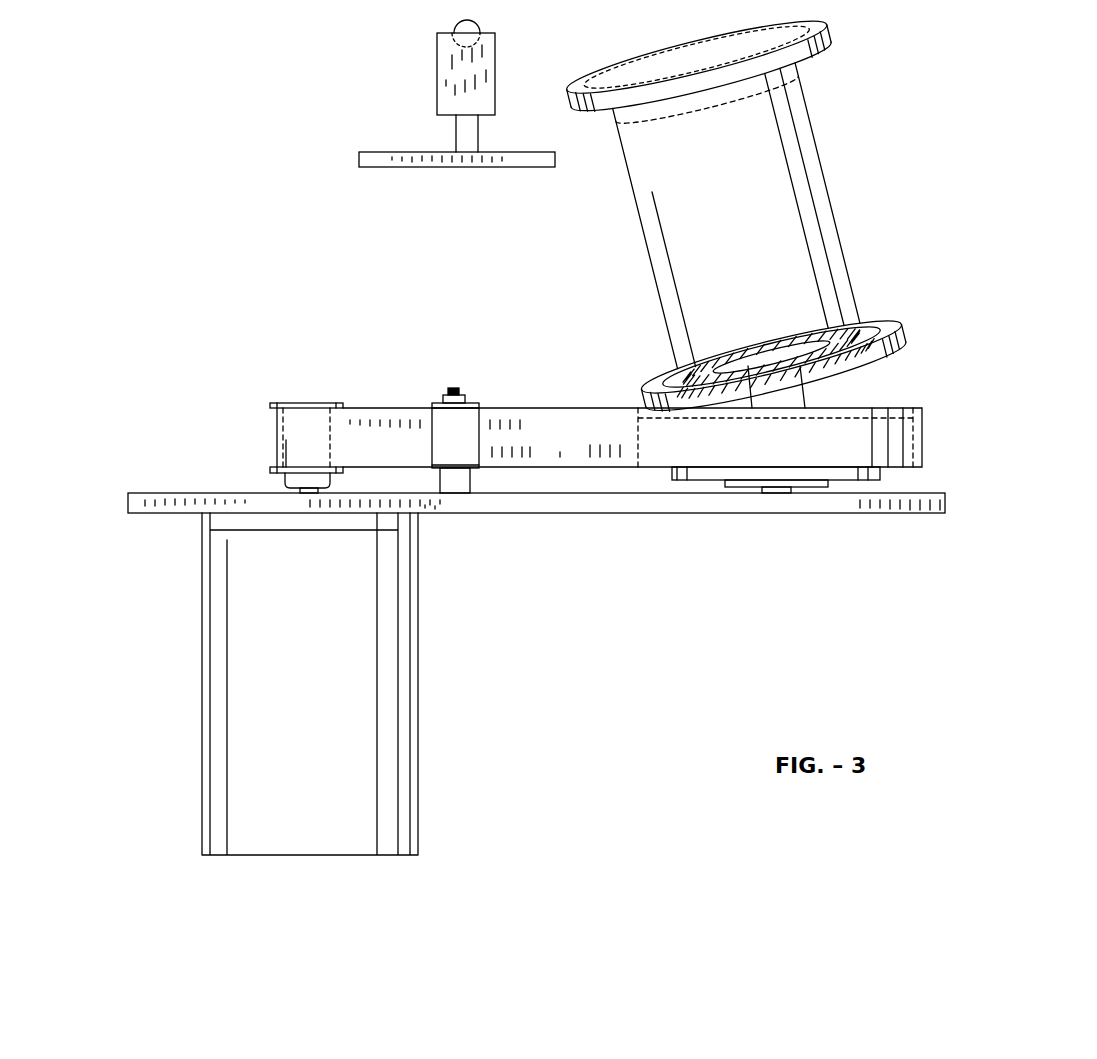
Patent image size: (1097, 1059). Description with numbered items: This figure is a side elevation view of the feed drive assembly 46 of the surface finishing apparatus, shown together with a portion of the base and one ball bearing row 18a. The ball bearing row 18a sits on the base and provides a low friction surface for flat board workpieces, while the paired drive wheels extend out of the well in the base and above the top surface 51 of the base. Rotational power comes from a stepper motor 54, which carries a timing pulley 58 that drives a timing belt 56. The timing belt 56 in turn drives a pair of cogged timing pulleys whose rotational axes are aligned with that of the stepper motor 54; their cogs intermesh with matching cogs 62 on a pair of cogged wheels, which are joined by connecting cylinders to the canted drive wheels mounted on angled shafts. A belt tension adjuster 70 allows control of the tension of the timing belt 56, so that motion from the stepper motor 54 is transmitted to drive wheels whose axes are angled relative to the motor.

The ball bearing row 18a is at (448, 47).
The top surface of base 51 is at (390, 163).
The cogs 62 is at (893, 353).
The timing belt 56 is at (533, 422).
The timing pulley 58 is at (281, 404).
The belt tension adjuster 70 is at (435, 404).
The stepper motor 54 is at (218, 765).
The feed drive assembly 46 is at (1003, 620).